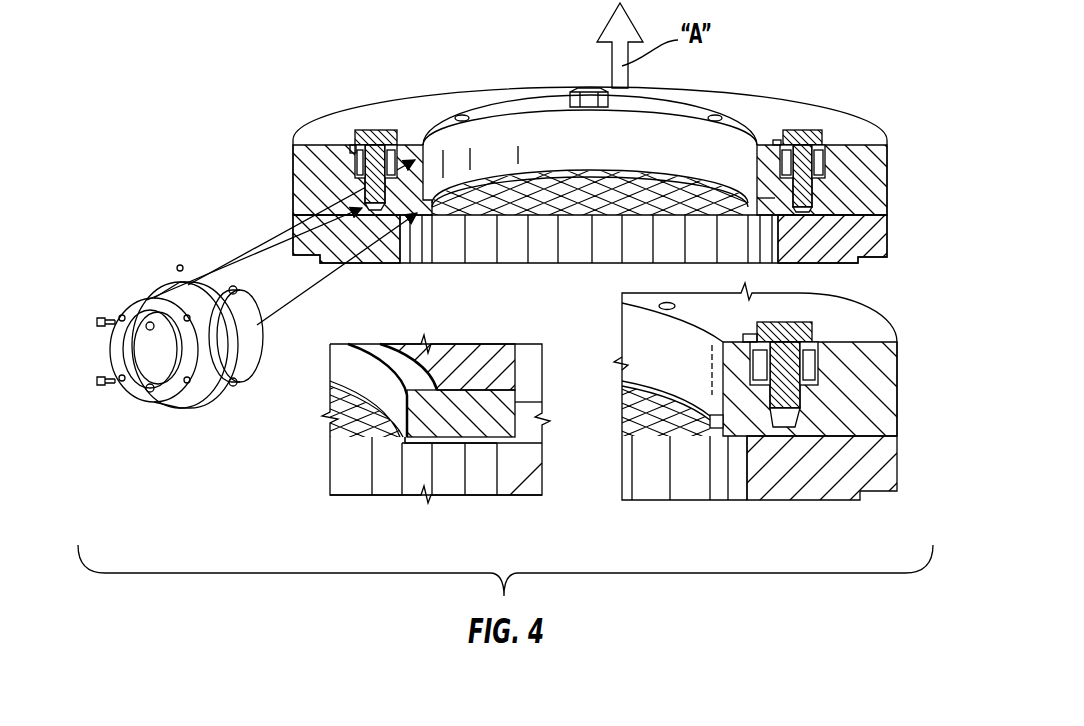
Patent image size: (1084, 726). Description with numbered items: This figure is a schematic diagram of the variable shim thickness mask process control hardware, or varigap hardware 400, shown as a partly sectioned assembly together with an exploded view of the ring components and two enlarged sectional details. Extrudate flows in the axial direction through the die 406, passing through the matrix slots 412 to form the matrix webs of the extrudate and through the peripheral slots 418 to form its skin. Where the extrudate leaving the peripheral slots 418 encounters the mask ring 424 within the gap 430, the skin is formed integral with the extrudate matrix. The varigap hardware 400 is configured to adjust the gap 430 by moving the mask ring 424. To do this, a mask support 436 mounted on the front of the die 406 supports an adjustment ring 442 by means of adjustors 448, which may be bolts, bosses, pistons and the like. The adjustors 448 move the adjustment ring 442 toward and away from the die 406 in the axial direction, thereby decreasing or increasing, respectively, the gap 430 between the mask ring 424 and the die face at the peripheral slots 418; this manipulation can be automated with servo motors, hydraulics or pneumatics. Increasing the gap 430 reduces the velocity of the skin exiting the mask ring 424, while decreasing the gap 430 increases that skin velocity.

The varigap hardware 400 is at (231, 148).
The die 406 is at (873, 245).
The matrix slots 412 is at (372, 497).
The peripheral slots 418 is at (500, 505).
The mask ring 424 is at (262, 350).
The gap 430 is at (520, 444).
The mask support 436 is at (334, 118).
The adjustment ring 442 is at (424, 128).
The adjustors 448 is at (800, 127).